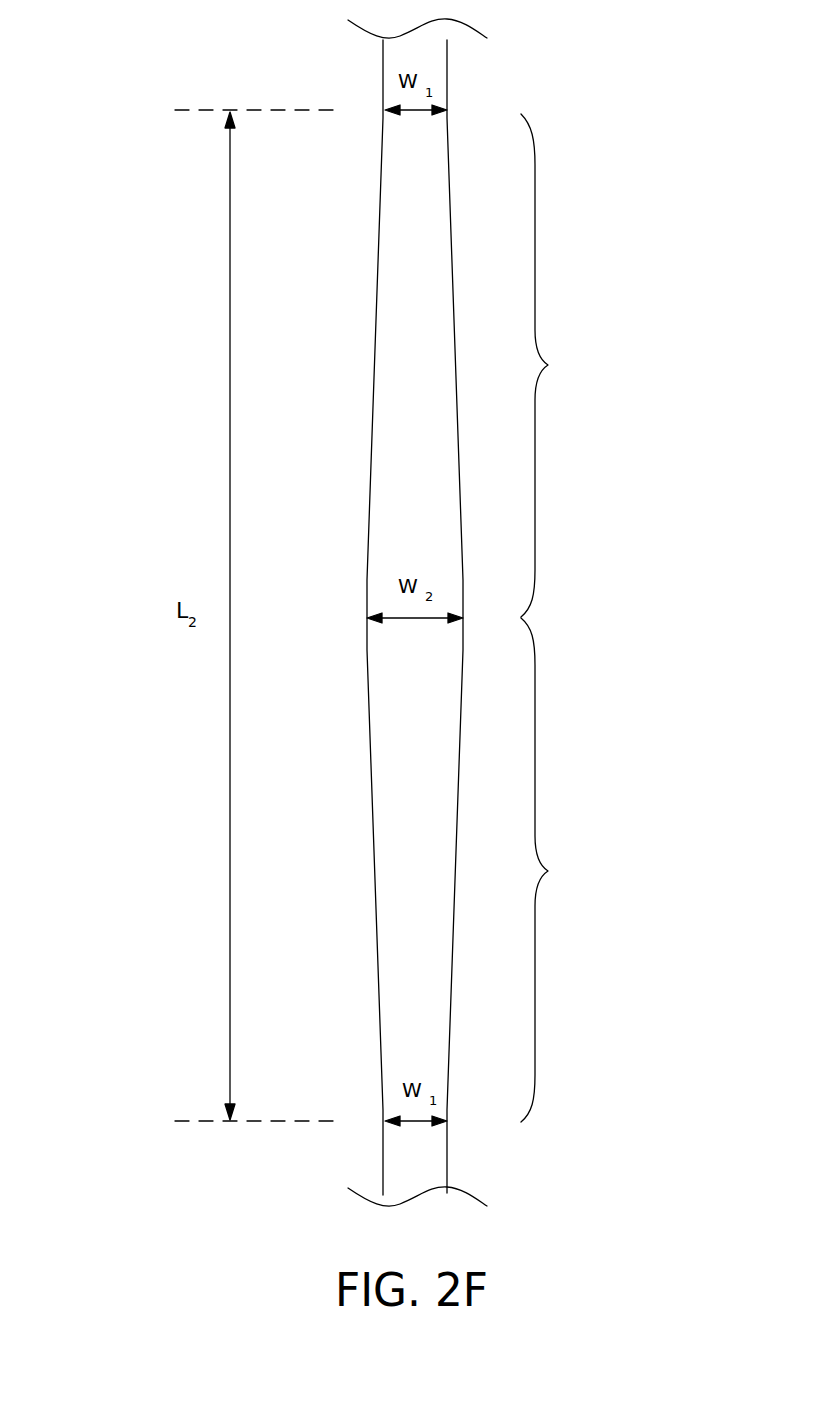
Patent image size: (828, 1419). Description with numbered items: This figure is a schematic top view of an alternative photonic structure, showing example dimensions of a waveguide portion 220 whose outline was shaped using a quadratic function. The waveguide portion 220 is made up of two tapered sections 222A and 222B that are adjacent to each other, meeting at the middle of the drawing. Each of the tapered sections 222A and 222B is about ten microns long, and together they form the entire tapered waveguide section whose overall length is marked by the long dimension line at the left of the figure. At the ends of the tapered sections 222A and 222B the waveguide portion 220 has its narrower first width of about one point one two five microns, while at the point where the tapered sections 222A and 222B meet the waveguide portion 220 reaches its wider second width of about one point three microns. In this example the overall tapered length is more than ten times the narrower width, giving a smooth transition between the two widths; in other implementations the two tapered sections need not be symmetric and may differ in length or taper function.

The waveguide portion 220 is at (153, 84).
The tapered section 222A is at (494, 366).
The tapered section 222B is at (494, 870).